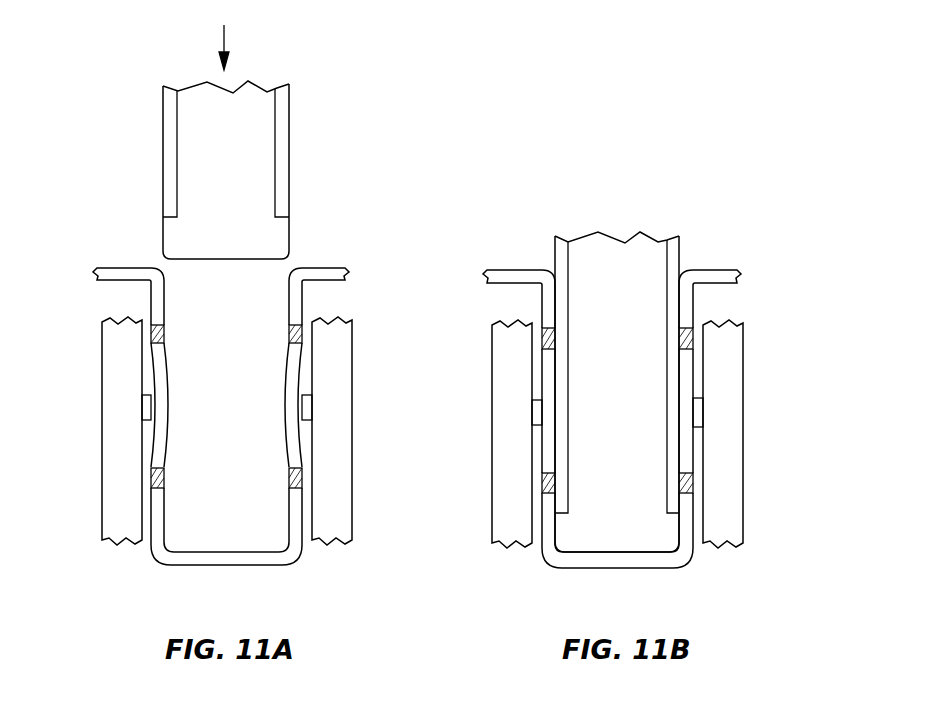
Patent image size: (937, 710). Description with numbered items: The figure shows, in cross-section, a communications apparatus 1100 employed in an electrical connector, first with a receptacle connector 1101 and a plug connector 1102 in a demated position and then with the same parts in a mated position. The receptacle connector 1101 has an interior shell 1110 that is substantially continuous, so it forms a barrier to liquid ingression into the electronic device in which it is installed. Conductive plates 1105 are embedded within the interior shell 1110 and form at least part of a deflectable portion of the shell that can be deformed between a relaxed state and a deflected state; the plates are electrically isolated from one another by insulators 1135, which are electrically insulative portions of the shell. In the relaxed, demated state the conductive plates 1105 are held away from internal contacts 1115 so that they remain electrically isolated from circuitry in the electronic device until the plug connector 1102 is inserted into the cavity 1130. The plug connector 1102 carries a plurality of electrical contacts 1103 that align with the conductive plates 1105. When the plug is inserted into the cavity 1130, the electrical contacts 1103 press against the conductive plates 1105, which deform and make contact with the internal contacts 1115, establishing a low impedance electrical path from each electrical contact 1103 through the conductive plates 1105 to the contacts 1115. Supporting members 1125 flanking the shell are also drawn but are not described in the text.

In FIG. 11A, the communications apparatus 1100 is at (427, 53).
In FIG. 11B, the communications apparatus 1100 is at (679, 122).
In FIG. 11A, the receptacle connector 1101 is at (370, 257).
In FIG. 11A, the plug connector 1102 is at (312, 101).
In FIG. 11B, the plug connector 1102 is at (616, 215).
In FIG. 11A, the electrical contacts 1103 is at (280, 167).
In FIG. 11B, the electrical contacts 1103 is at (672, 243).
In FIG. 11A, the conductive plates 1105 is at (289, 404).
In FIG. 11B, the conductive plates 1105 is at (668, 410).
In FIG. 11A, the interior shell 1110 is at (278, 528).
In FIG. 11B, the interior shell 1110 is at (668, 533).
In FIG. 11A, the internal contacts 1115 is at (147, 400).
In FIG. 11B, the internal contacts 1115 is at (699, 405).
In FIG. 11A, the support rail 1125 is at (125, 428).
In FIG. 11B, the support rail 1125 is at (722, 452).
In FIG. 11A, the cavity 1130 is at (208, 302).
In FIG. 11B, the cavity 1130 is at (605, 306).
In FIG. 11A, the insulators 1135 is at (155, 335).